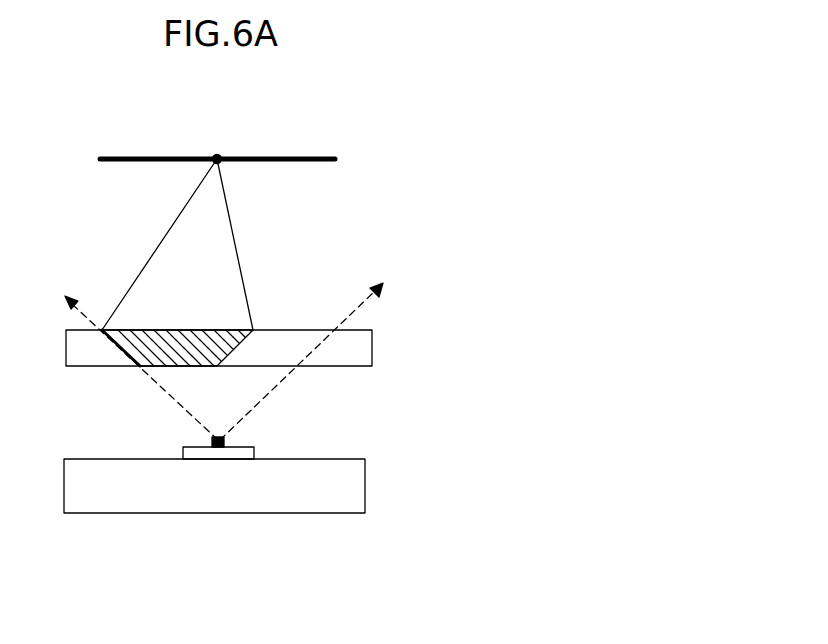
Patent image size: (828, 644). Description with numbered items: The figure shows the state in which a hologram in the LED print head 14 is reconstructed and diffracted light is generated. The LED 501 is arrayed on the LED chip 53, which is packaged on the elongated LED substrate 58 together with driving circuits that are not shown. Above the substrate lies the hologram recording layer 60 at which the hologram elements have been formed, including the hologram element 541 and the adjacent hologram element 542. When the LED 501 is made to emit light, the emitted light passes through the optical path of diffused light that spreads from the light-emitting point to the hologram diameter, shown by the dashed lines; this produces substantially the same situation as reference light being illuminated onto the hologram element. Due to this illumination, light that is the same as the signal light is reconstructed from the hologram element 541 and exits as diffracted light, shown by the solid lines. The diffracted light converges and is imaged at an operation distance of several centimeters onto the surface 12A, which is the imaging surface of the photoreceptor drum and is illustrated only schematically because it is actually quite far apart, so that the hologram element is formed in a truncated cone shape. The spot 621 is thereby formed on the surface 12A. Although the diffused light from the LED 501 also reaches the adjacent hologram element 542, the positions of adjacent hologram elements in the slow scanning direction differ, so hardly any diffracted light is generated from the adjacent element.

The surface 12A is at (323, 161).
The spot 621 is at (220, 157).
The hologram recording layer 60 is at (363, 347).
The hologram element 541 is at (145, 330).
The hologram element 542 is at (283, 340).
The LED print head 14 is at (405, 270).
The LED substrate 58 is at (350, 487).
The LED chip 53 is at (183, 452).
The LED 501 is at (224, 440).